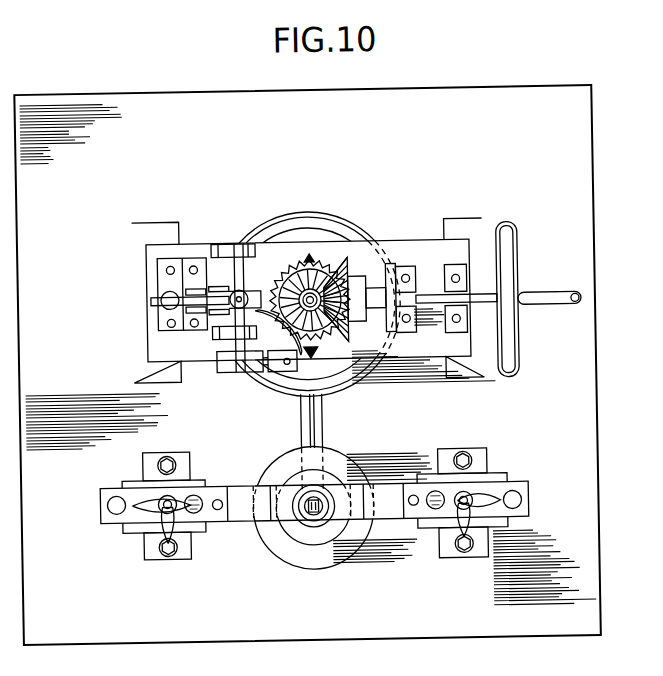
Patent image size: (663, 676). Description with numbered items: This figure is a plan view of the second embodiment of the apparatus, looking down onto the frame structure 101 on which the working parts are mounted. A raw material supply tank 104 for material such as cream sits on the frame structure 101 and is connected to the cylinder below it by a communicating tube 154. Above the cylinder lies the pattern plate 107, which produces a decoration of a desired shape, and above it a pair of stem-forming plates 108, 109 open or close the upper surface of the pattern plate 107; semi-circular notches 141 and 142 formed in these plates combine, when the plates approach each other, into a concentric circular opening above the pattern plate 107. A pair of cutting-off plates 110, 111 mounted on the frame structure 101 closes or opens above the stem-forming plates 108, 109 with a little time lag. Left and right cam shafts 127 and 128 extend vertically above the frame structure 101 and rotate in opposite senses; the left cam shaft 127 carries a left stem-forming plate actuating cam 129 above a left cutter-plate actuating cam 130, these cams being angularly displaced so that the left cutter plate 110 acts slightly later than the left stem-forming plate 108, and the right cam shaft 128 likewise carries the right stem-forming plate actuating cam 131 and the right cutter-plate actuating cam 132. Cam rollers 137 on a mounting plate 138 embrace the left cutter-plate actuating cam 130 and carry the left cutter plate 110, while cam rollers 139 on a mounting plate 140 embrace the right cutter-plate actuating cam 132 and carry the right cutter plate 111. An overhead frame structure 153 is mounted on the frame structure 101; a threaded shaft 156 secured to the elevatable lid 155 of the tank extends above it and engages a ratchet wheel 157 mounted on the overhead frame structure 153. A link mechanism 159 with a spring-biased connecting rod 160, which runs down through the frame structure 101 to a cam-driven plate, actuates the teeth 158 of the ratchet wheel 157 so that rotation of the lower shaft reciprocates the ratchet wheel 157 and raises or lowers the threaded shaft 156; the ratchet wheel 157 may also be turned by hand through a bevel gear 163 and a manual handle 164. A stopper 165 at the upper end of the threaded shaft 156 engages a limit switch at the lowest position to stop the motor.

The frame structure 101 is at (582, 252).
The raw material supply tank 104 is at (362, 218).
The pattern plate 107 is at (309, 525).
The left stem-forming plate 108 is at (288, 524).
The right stem-forming plate 109 is at (345, 489).
The left cutter plate 110 is at (249, 516).
The right cutter plate 111 is at (385, 520).
The left cam shaft 127 is at (154, 519).
The right cam shaft 128 is at (464, 527).
The left stem-forming plate actuating cam 129 is at (159, 458).
The left cutter-plate actuating cam 130 is at (145, 499).
The right stem-forming plate actuating cam 131 is at (461, 492).
The right cutter-plate actuating cam 132 is at (482, 500).
The cam rollers 137 is at (112, 514).
The mounting plate 138 is at (201, 488).
The cam rollers 139 is at (431, 498).
The mounting plate 140 is at (427, 521).
The semi-circular notch 141 is at (301, 492).
The semi-circular notch 142 is at (328, 520).
The overhead frame structure 153 is at (425, 249).
The communicating tube 154 is at (300, 403).
The elevatable lid 155 is at (296, 232).
The threaded shaft 156 is at (321, 280).
The ratchet wheel 157 is at (314, 260).
The teeth 158 is at (308, 353).
The link mechanism 159 is at (220, 309).
The spring-biased connecting rod 160 is at (174, 289).
The bevel gear 163 is at (284, 290).
The manual handle 164 is at (551, 301).
The stopper 165 is at (277, 302).